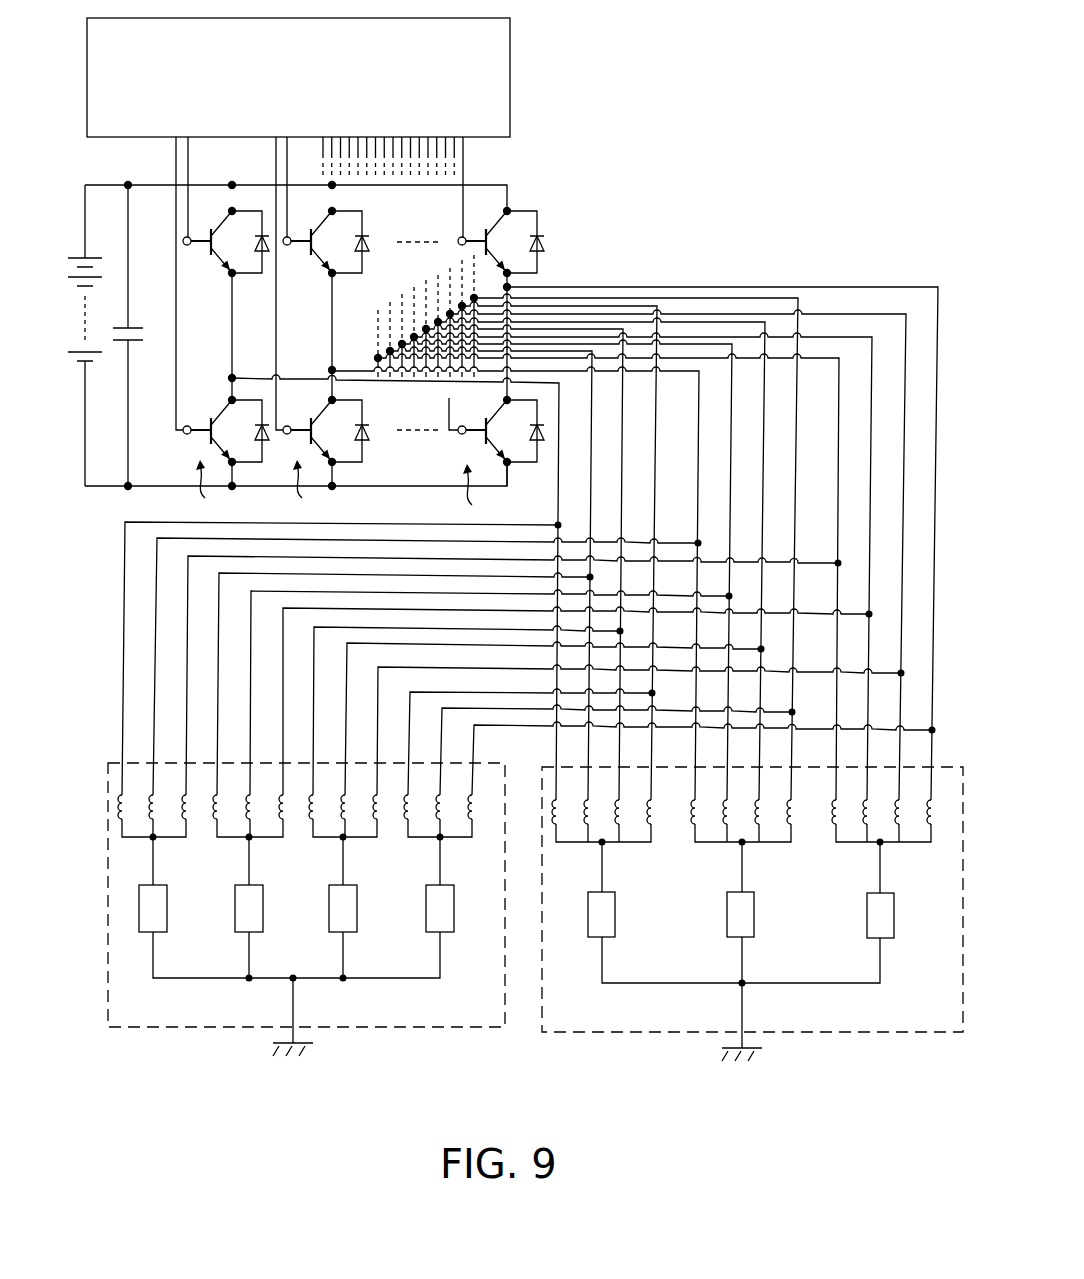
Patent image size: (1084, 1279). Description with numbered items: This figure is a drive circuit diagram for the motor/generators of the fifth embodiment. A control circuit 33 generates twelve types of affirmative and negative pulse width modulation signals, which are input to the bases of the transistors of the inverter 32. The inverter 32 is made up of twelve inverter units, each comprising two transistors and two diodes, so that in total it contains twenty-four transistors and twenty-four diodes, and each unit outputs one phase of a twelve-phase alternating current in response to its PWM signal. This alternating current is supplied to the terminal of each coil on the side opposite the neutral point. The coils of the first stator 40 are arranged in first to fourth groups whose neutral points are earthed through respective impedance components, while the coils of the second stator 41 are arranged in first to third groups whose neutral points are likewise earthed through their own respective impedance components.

The control circuit 33 is at (510, 40).
The inverter 32 is at (540, 187).
The first stator 40 is at (178, 1027).
The second stator 41 is at (610, 1032).